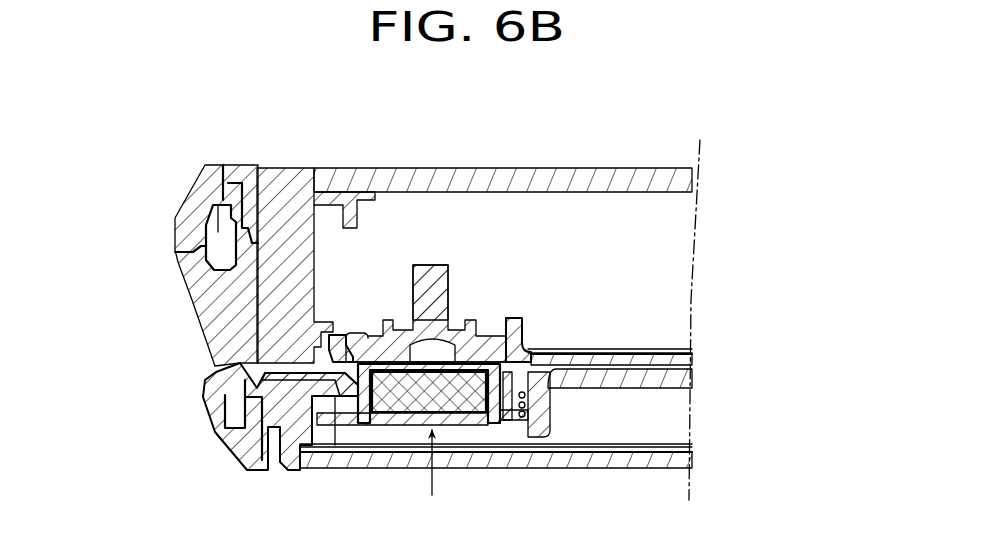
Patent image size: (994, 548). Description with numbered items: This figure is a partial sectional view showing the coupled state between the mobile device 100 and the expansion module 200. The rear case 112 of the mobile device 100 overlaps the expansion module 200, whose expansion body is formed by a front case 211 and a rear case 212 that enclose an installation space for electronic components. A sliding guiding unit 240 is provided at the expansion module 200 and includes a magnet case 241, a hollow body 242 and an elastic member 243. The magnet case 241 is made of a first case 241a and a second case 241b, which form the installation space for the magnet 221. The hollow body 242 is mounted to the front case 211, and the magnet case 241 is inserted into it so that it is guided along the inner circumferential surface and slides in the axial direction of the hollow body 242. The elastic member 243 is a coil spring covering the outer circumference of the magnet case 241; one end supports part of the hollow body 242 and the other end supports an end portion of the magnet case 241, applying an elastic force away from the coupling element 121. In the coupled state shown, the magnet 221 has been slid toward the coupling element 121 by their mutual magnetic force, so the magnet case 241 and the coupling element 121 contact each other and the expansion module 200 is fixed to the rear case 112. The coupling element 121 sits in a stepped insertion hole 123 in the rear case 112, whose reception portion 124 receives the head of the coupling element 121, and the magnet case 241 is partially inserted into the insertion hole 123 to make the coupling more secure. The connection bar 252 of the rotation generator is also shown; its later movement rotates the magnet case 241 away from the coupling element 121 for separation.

The mobile device 100 is at (150, 238).
The expansion module 200 is at (185, 408).
The rear case 112 is at (655, 357).
The coupling element 121 is at (430, 270).
The insertion hole 123 is at (504, 345).
The reception portion 124 is at (485, 345).
The front case 211 is at (655, 383).
The rear case 212 is at (628, 462).
The magnet 221 is at (406, 412).
The sliding guiding unit 240 is at (378, 436).
The magnet case 241 is at (118, 277).
The first case 241a is at (360, 365).
The second case 241b is at (362, 333).
The hollow body 242 is at (575, 418).
The elastic member 243 is at (525, 412).
The connection bar 252 is at (664, 446).